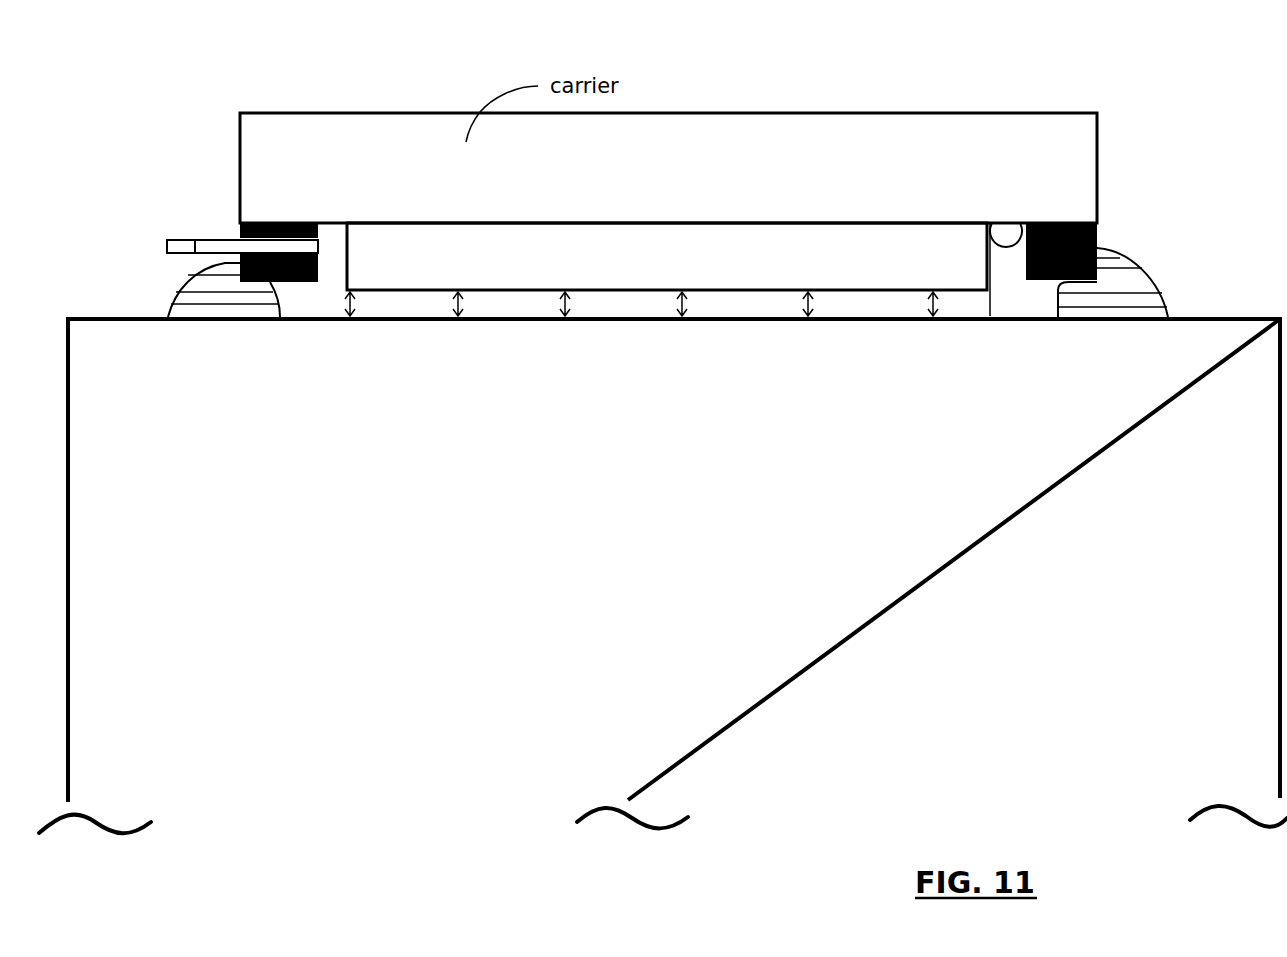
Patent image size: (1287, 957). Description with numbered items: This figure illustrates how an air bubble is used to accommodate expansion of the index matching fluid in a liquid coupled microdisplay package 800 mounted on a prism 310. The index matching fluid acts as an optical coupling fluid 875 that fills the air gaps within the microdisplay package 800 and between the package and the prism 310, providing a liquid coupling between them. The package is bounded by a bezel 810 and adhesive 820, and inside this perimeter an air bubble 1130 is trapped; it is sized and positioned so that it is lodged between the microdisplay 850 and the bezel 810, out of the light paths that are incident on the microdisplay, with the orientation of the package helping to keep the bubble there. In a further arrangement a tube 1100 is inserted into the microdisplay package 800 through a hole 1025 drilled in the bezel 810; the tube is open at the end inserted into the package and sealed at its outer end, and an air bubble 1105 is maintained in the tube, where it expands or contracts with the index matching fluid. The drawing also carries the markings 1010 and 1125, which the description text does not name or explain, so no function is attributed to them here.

The prism 310 is at (271, 520).
The microdisplay package 800 is at (912, 76).
The bezel 810 is at (307, 284).
The adhesive 820 is at (183, 302).
The microdisplay 850 is at (755, 213).
The optical coupling fluid 875 is at (732, 303).
The standoff height 1010 is at (562, 302).
The hole 1025 is at (307, 245).
The tube 1100 is at (213, 239).
The air bubble 1105 is at (167, 238).
The channel 1125 is at (1002, 274).
The air bubble 1130 is at (1005, 246).